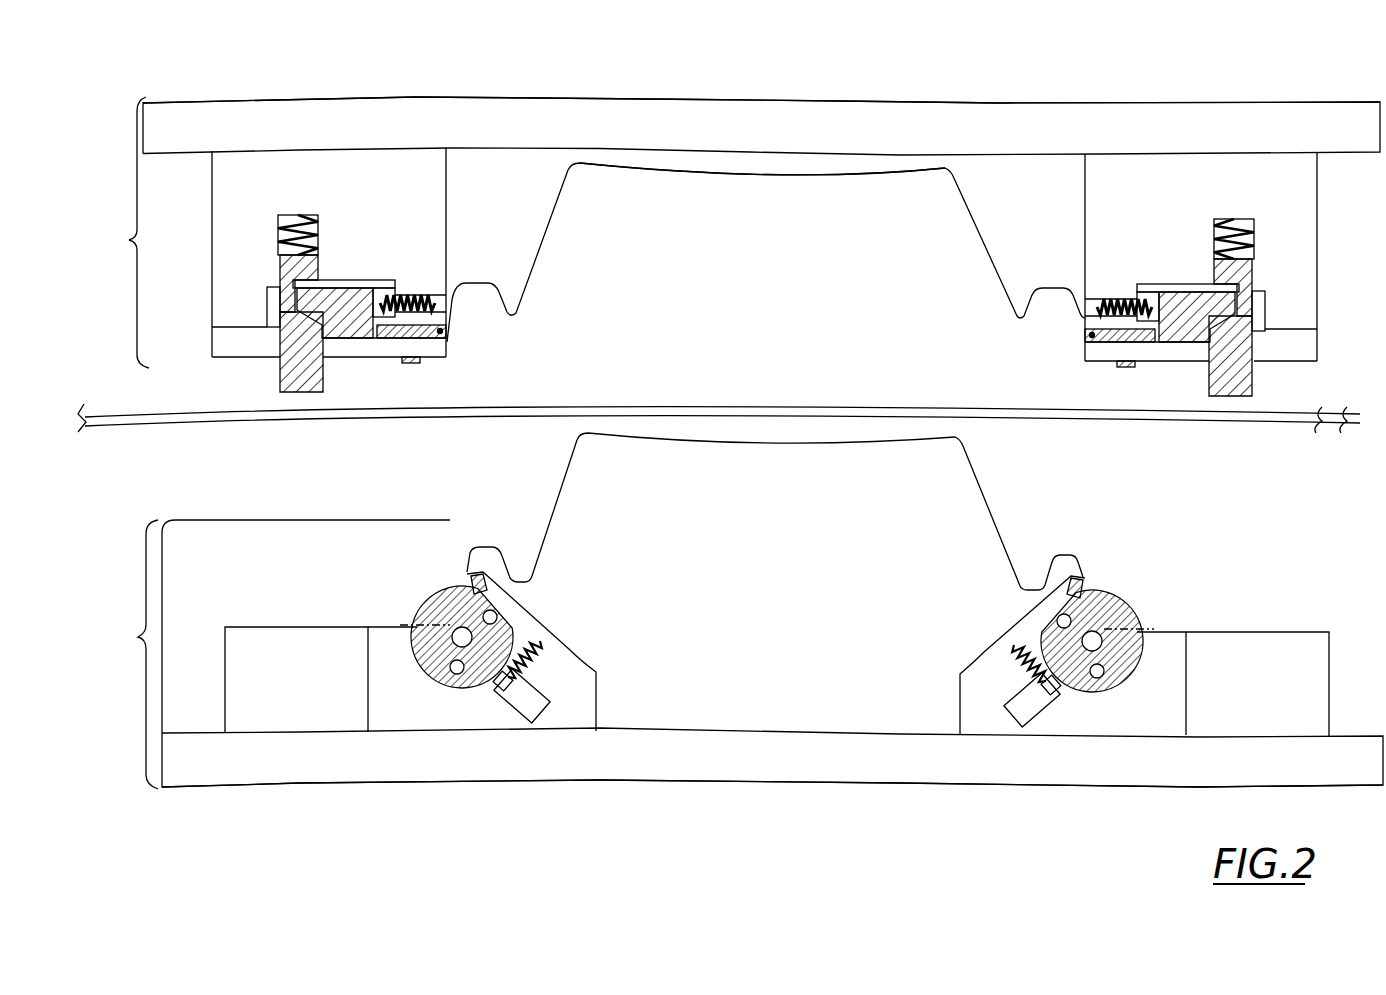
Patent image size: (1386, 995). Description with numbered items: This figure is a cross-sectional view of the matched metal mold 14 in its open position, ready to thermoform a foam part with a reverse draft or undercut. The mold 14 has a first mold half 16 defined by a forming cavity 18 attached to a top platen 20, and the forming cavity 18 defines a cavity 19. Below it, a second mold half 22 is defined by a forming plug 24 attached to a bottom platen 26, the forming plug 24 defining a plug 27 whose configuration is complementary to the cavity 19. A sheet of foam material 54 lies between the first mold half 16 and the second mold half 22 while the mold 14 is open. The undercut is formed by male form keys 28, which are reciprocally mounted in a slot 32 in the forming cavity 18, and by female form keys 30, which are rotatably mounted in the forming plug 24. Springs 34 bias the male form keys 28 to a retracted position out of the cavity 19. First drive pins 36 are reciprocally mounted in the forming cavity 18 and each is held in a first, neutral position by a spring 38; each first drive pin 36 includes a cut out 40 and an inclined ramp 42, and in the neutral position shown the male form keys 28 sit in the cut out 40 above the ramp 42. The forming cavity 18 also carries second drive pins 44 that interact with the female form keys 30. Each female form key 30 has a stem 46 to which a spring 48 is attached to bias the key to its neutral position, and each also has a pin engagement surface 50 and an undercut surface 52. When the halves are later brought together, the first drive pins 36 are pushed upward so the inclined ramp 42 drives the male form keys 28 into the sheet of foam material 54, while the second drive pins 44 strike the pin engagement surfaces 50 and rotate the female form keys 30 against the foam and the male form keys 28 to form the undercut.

The mold 14 is at (260, 86).
The first mold half 16 is at (703, 232).
The forming cavity 18 is at (498, 158).
The cavity 19 is at (908, 236).
The top platen 20 is at (685, 118).
The second mold half 22 is at (741, 654).
The forming plug 24 is at (496, 503).
The bottom platen 26 is at (556, 762).
The plug 27 is at (577, 463).
The male form keys 28 is at (443, 333).
The female form keys 30 is at (1052, 644).
The slot 32 is at (272, 290).
The springs 34 is at (428, 294).
The first drive pins 36 is at (315, 264).
The spring 38 is at (300, 215).
The cut out 40 is at (315, 286).
The inclined ramp 42 is at (325, 343).
The second drive pins 44 is at (411, 361).
The stem 46 is at (494, 687).
The spring 48 is at (569, 648).
The pin engagement surface 50 is at (438, 618).
The undercut surface 52 is at (470, 590).
The sheet of foam material 54 is at (1313, 416).